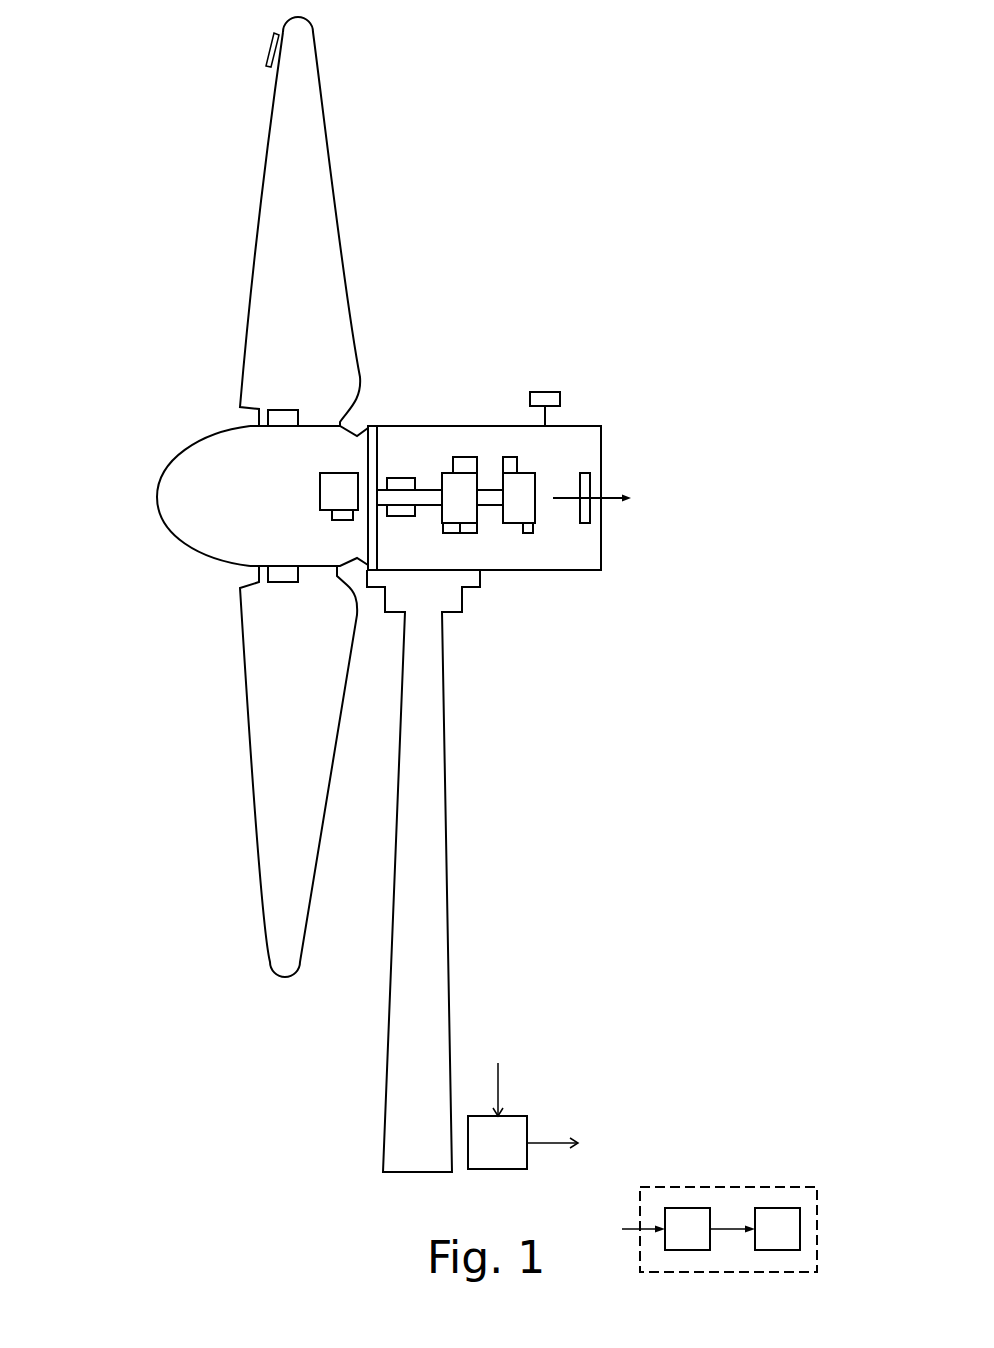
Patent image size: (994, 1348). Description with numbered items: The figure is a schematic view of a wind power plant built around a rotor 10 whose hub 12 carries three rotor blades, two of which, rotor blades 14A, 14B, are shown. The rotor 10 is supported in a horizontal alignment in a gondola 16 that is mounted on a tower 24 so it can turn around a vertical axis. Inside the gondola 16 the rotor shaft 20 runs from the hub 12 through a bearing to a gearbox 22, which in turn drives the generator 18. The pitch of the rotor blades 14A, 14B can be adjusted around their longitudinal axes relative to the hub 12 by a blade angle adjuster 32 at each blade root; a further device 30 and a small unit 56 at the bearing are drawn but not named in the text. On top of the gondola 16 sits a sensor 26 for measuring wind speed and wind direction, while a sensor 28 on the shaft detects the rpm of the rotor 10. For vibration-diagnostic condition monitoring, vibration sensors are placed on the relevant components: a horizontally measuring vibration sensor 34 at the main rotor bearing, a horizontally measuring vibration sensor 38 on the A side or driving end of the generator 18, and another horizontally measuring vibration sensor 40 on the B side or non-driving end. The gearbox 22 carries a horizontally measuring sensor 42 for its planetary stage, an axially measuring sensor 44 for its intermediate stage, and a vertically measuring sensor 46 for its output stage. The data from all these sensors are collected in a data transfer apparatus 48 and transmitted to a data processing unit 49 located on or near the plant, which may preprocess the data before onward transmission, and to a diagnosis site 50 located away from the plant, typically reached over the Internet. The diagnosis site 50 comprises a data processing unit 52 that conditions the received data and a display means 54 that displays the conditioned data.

The rotor 10 is at (200, 758).
The hub 12 is at (192, 467).
The rotor blade 14A is at (312, 117).
The rotor blade 14B is at (268, 888).
The gondola 16 is at (128, 492).
The generator 18 is at (508, 510).
The rotor shaft 20 is at (420, 490).
The gearbox 22 is at (448, 510).
The tower 24 is at (437, 892).
The sensor 26 is at (547, 393).
The sensor 28 is at (400, 482).
The pitch drive 30 is at (318, 492).
The blade angle adjuster 32 is at (268, 423).
The vibration sensor 34 is at (343, 520).
The vibration sensor 38 is at (515, 458).
The vibration sensor 40 is at (527, 533).
The sensor 42 is at (467, 457).
The sensor 44 is at (452, 533).
The sensor 46 is at (477, 528).
The data transfer apparatus 48 is at (590, 487).
The data processing unit 49 is at (487, 1156).
The diagnosis site 50 is at (727, 1187).
The data processing unit 52 is at (676, 1241).
The display means 54 is at (766, 1241).
The bearing sensor 56 is at (398, 516).